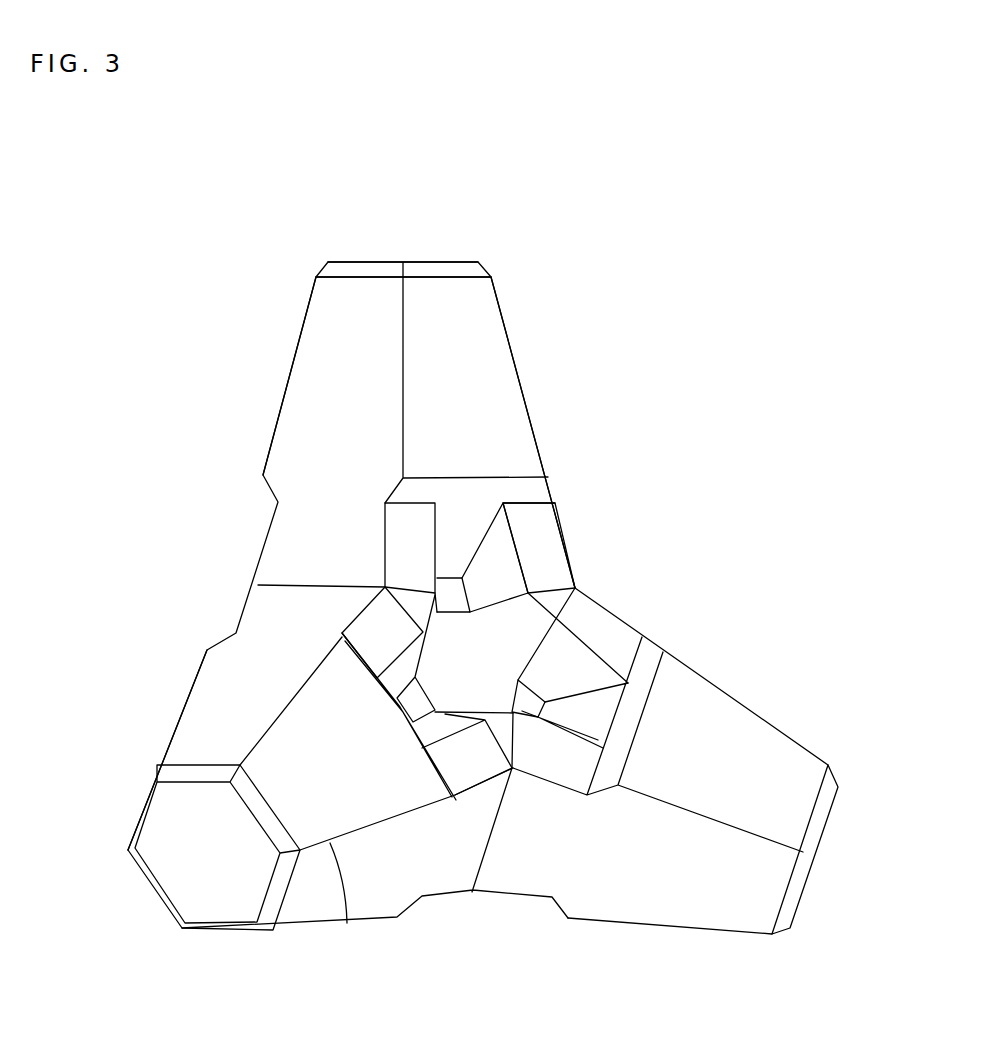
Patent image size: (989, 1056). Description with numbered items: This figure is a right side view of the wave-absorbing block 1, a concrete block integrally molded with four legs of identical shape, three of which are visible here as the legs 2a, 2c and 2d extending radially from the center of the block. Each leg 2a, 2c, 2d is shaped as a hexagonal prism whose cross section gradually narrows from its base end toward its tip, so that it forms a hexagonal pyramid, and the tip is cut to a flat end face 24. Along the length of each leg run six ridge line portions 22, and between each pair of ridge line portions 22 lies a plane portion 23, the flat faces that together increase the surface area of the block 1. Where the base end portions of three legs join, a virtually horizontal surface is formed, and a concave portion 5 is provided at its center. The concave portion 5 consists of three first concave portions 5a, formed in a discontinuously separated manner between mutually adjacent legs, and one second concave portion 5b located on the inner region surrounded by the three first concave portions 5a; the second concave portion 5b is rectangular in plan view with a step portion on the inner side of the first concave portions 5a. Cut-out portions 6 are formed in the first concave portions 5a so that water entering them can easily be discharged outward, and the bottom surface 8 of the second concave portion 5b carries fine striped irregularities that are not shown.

The wave-absorbing block 1 is at (403, 242).
The leg 2a is at (514, 358).
The leg 2c is at (307, 930).
The leg 2d is at (762, 717).
The concave portion 5 is at (606, 487).
The first concave portion 5a is at (533, 519).
The second concave portion 5b is at (517, 627).
The cut-out portion 6 is at (380, 532).
The bottom surface 8 is at (488, 680).
The ridge line portion 22 is at (292, 710).
The plane portion 23 is at (178, 743).
The end face 24 is at (463, 262).